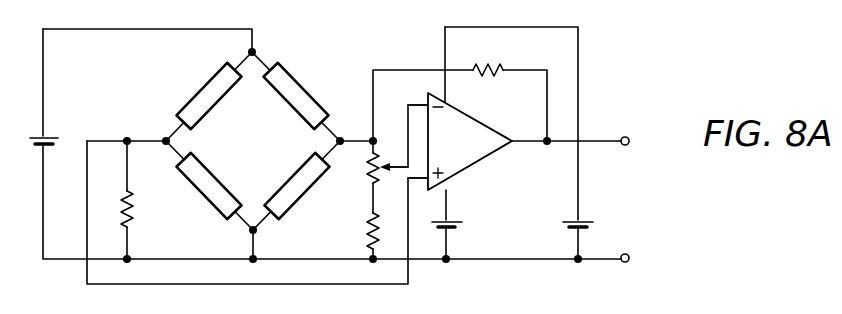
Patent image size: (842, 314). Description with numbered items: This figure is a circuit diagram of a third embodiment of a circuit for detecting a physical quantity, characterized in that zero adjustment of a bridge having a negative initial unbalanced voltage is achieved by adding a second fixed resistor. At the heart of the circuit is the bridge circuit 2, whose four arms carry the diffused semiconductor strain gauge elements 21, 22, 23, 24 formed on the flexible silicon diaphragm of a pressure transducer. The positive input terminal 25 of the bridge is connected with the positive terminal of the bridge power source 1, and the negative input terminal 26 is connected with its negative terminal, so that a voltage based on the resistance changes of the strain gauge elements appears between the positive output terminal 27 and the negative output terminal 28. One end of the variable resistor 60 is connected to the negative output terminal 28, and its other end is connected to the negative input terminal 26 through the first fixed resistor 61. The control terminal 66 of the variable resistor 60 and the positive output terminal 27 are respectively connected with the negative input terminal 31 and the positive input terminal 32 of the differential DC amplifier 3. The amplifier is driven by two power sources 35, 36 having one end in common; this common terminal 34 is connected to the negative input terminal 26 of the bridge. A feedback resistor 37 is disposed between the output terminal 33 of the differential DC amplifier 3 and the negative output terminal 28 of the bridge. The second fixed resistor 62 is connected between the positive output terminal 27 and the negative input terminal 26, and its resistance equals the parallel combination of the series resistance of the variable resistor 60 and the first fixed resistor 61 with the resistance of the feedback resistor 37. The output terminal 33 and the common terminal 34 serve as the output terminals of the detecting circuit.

The bridge power source 1 is at (40, 136).
The bridge circuit 2 is at (259, 152).
The differential DC amplifier 3 is at (464, 152).
The diffused semiconductor strain gauge element 21 is at (210, 92).
The diffused semiconductor strain gauge element 22 is at (217, 200).
The diffused semiconductor strain gauge element 23 is at (297, 206).
The diffused semiconductor strain gauge element 24 is at (291, 87).
The positive input terminal 25 is at (254, 49).
The negative input terminal 26 is at (250, 233).
The positive output terminal 27 is at (166, 139).
The negative output terminal 28 is at (341, 138).
The negative input terminal 31 is at (418, 103).
The positive input terminal 32 is at (416, 178).
The output terminal 33 is at (629, 140).
The common terminal 34 is at (628, 257).
The power source 35 is at (448, 221).
The power source 36 is at (585, 222).
The feedback resistor 37 is at (492, 65).
The variable resistor 60 is at (367, 175).
The first fixed resistor 61 is at (370, 218).
The second fixed resistor 62 is at (133, 206).
The control terminal 66 is at (397, 162).